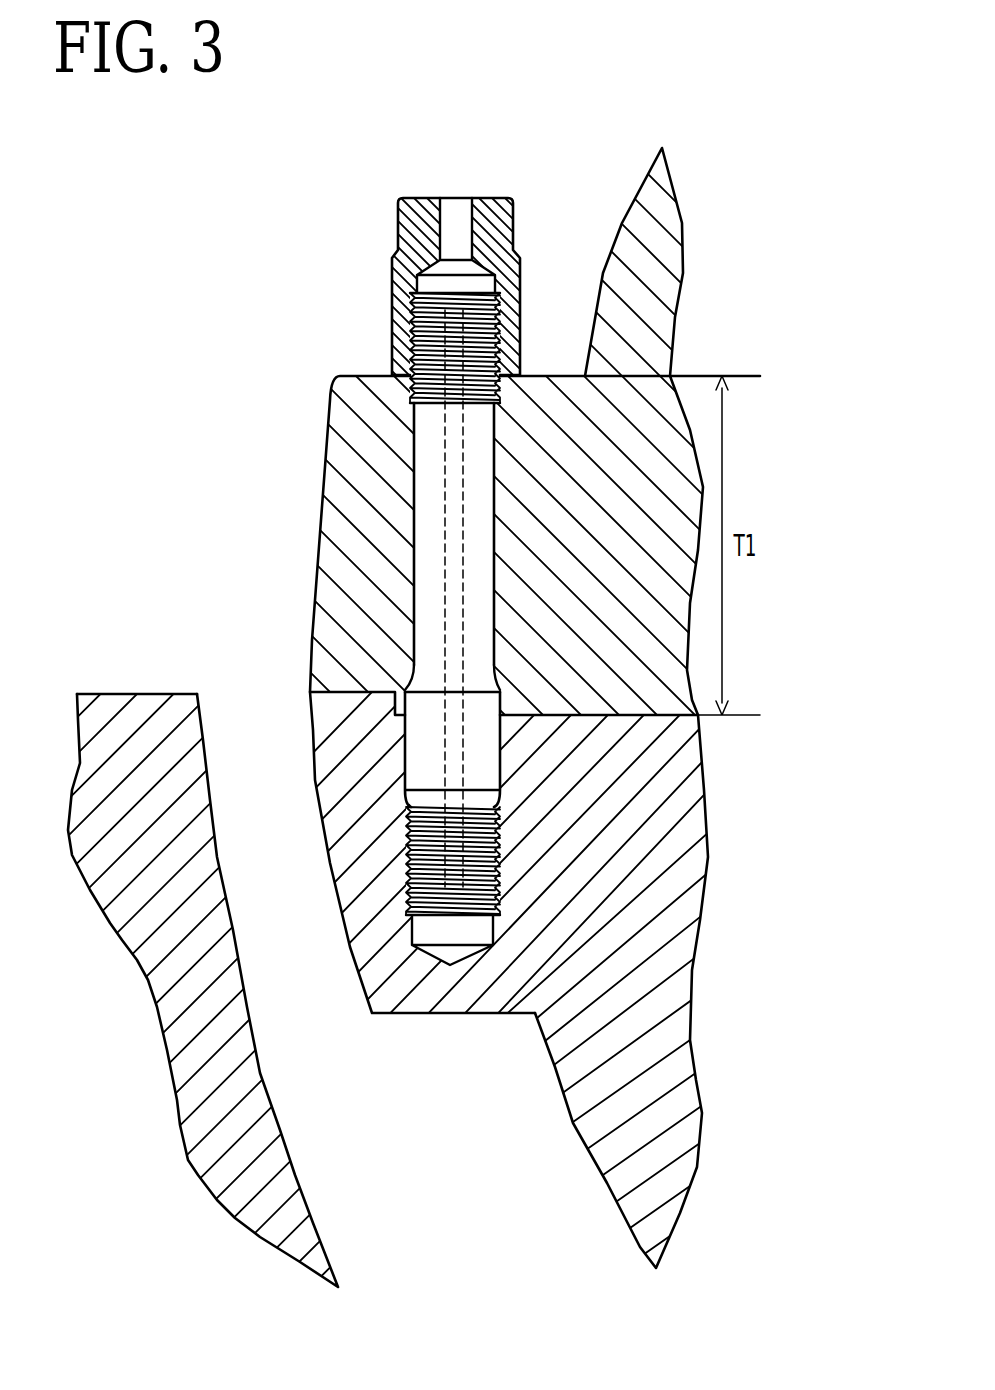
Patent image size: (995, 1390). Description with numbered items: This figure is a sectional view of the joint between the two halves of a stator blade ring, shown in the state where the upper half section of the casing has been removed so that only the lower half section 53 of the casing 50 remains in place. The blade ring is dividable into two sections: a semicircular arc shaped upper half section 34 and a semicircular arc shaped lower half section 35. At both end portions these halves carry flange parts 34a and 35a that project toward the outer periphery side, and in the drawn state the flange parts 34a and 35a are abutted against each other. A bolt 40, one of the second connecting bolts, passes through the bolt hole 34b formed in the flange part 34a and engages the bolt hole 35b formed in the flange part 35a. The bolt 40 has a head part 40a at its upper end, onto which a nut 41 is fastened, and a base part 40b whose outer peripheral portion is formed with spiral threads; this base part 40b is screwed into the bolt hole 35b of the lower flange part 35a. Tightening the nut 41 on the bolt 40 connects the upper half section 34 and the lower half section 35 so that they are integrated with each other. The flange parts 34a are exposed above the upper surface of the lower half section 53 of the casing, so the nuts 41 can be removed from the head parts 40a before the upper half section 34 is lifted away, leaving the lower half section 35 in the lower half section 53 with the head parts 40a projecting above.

The upper half section of the blade ring 34 is at (497, 695).
The flange part 34a is at (335, 440).
The bolt hole 34b is at (493, 498).
The lower half section of the blade ring 35 is at (480, 862).
The flange part 35a is at (342, 852).
The bolt hole 35b is at (495, 742).
The bolt 40 is at (369, 581).
The head part 40a is at (393, 298).
The base part 40b is at (407, 905).
The nut 41 is at (398, 230).
The casing 50 is at (497, 695).
The lower half section of the casing 53 is at (100, 703).